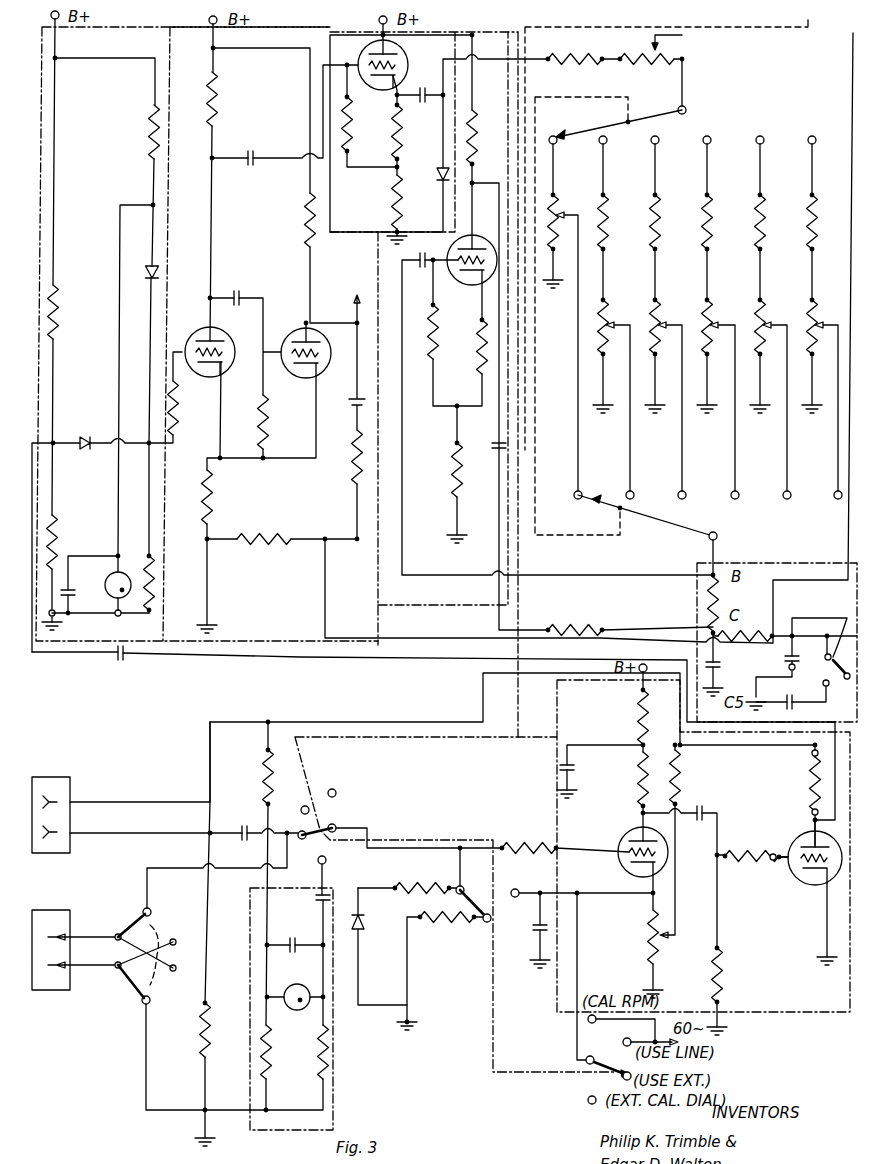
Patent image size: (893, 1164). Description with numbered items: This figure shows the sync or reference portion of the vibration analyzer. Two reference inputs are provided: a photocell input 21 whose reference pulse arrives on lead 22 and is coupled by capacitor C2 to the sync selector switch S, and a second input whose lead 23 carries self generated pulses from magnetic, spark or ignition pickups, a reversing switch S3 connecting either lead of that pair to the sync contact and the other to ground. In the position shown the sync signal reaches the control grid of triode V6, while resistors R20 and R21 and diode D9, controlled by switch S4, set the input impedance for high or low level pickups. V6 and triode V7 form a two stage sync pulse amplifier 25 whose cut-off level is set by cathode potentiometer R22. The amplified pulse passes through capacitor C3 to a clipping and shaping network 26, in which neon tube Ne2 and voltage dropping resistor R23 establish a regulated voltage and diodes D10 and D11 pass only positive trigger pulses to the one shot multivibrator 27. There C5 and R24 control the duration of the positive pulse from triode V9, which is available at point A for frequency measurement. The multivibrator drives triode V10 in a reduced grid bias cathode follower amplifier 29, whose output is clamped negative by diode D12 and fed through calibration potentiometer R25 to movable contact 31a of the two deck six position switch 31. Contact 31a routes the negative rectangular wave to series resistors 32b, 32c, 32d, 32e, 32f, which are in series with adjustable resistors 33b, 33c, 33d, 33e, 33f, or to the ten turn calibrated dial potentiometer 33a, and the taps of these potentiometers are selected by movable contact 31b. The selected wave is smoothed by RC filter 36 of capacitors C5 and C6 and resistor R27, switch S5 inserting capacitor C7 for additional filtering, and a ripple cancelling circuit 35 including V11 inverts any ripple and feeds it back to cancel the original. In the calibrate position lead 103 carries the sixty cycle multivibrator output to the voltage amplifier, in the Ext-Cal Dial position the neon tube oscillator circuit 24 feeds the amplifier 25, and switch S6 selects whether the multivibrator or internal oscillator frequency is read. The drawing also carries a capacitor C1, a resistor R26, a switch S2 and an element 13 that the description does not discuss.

The tube 13 is at (200, 333).
The signal input 21 is at (165, 800).
The lead 22 is at (175, 832).
The input lead 23 is at (108, 934).
The neon tube oscillator circuit 24 is at (336, 1066).
The two stage sync pulse amplifier 25 is at (554, 728).
The clipping and shaping network 26 is at (103, 26).
The one shot multivibrator network 27 is at (256, 28).
The reduced grid bias cathode follower amplifier circuit 29 is at (365, 31).
The two deck six position switch 31 is at (730, 151).
The movable contact 31a is at (645, 125).
The movable contact 31b is at (652, 525).
The resistor 32b is at (606, 212).
The resistor 32c is at (658, 212).
The resistor 32d is at (710, 212).
The resistor 32e is at (763, 212).
The resistor 32f is at (815, 212).
The potentiometer 33a is at (563, 213).
The adjustable resistor 33b is at (606, 320).
The adjustable resistor 33c is at (658, 320).
The adjustable resistor 33d is at (710, 320).
The adjustable resistor 33e is at (763, 320).
The adjustable resistor 33f is at (815, 320).
The ripple cancelling circuit 35 is at (499, 33).
The RC filter 36 is at (764, 564).
The lead 103 is at (326, 585).
The sync selector switch S is at (722, 31).
The point A is at (354, 298).
The resistor R20 is at (425, 888).
The resistor R21 is at (440, 922).
The cathode potentiometer R22 is at (647, 925).
The voltage dropping resistor R23 is at (148, 135).
The resistor R24 is at (266, 447).
The calibration potentiometer R25 is at (665, 68).
The resistor R26 is at (722, 612).
The resistor R27 is at (745, 642).
The capacitor C1 is at (79, 583).
The capacitor C2 is at (242, 832).
The capacitor C3 is at (122, 658).
The capacitor C5 is at (240, 290).
The capacitor C6 is at (783, 673).
The capacitor C7 is at (814, 701).
The diode D9 is at (360, 930).
The diode D10 is at (145, 272).
The second diode D11 is at (85, 436).
The negative clamping diode D12 is at (441, 166).
The triode V6 is at (620, 838).
The triode V7 is at (808, 882).
The triode V9 is at (312, 330).
The triode V10 is at (400, 60).
The triode V11 is at (472, 247).
The neon tube Ne2 is at (116, 572).
The switch S2 is at (632, 1059).
The reversing switch S3 is at (150, 926).
The switch S4 is at (481, 908).
The switch S5 is at (821, 637).
The switch S6 is at (337, 791).